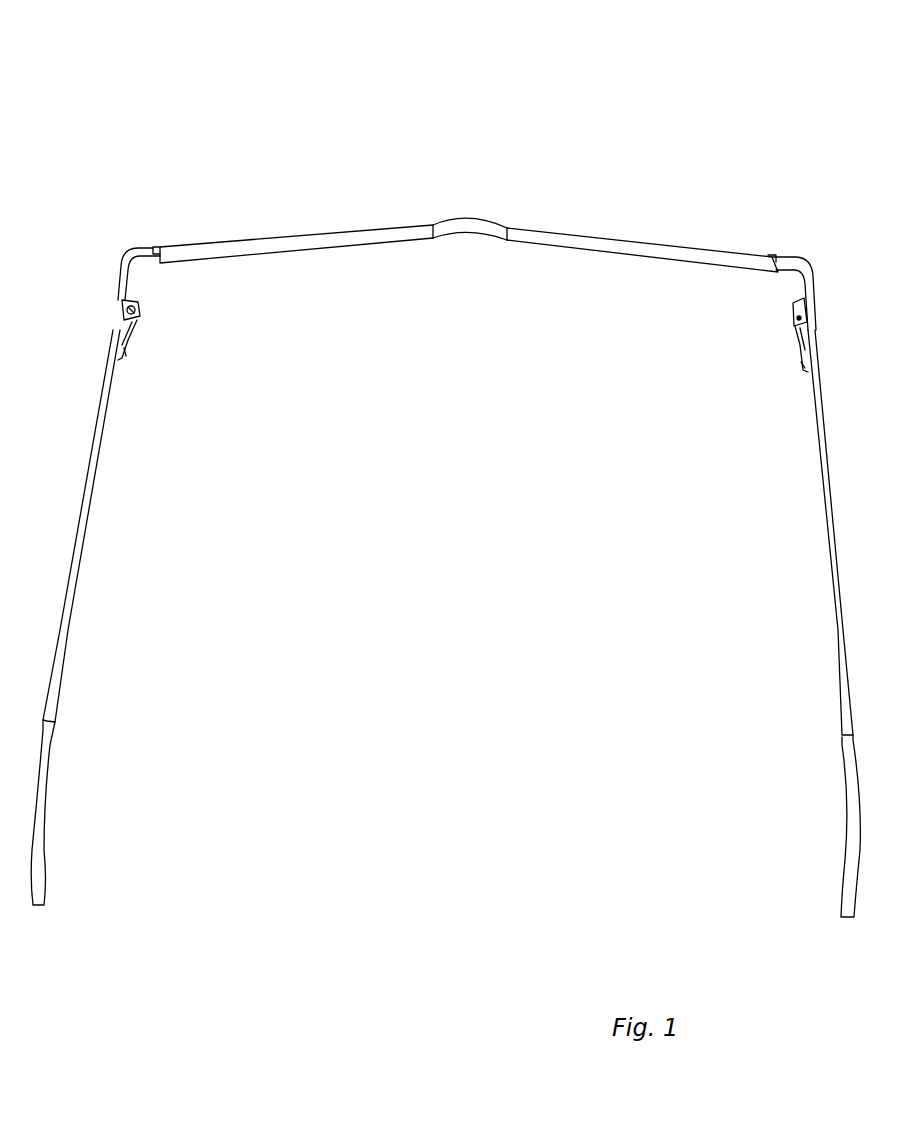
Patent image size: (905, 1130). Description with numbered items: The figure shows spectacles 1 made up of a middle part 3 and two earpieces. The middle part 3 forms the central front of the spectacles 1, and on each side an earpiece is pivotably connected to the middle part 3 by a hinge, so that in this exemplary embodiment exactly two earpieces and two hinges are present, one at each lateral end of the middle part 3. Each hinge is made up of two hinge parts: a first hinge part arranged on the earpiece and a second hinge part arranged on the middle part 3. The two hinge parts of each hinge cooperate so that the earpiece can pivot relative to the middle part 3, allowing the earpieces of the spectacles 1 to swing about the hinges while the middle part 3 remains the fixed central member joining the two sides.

The spectacles 1 is at (656, 70).
The middle part 3 is at (772, 256).